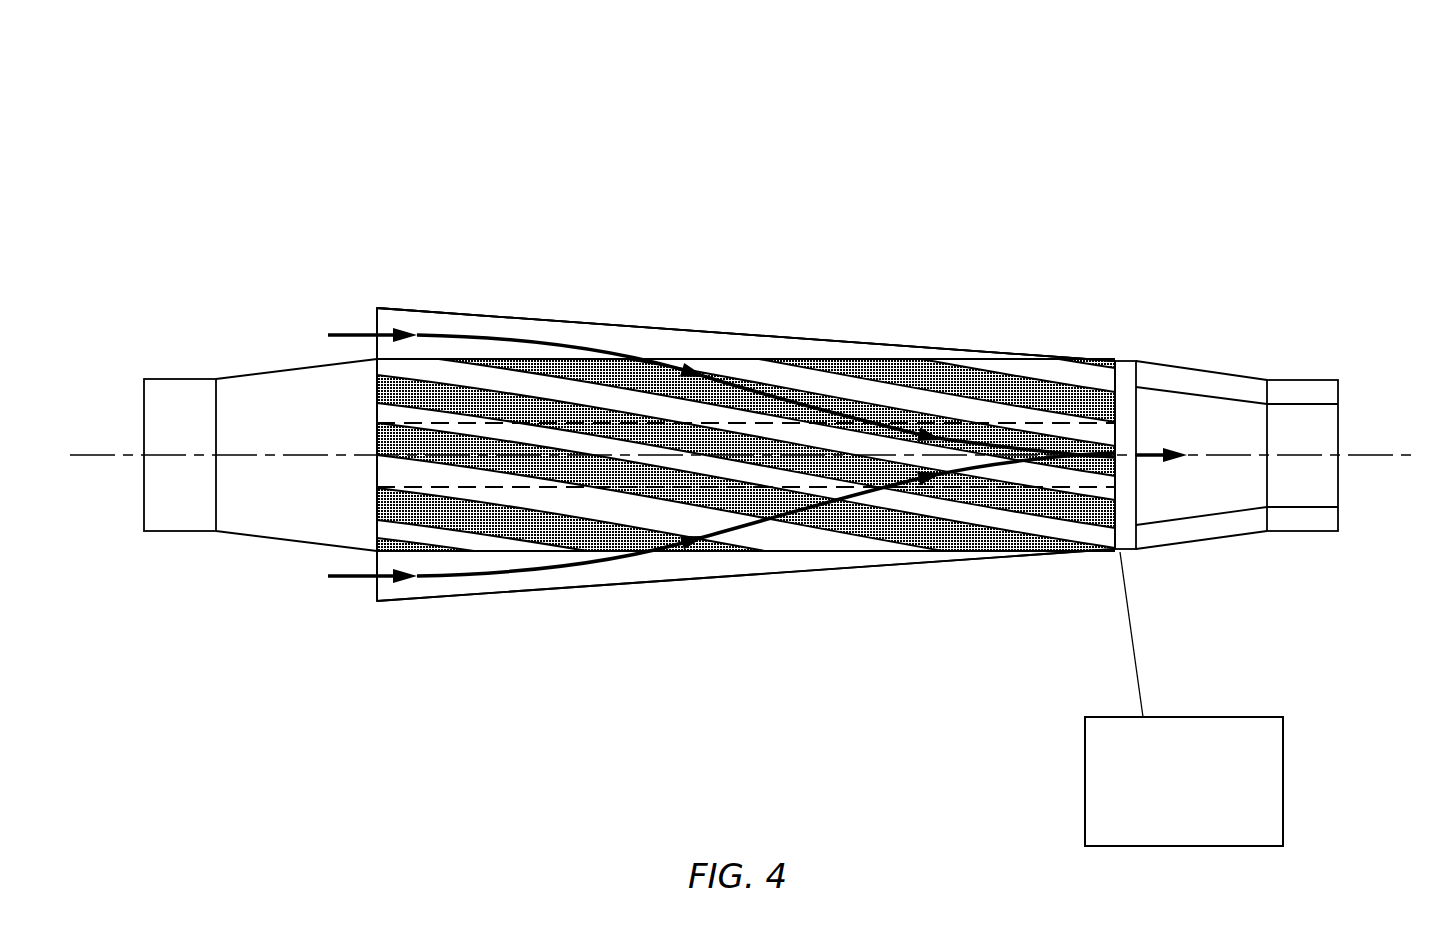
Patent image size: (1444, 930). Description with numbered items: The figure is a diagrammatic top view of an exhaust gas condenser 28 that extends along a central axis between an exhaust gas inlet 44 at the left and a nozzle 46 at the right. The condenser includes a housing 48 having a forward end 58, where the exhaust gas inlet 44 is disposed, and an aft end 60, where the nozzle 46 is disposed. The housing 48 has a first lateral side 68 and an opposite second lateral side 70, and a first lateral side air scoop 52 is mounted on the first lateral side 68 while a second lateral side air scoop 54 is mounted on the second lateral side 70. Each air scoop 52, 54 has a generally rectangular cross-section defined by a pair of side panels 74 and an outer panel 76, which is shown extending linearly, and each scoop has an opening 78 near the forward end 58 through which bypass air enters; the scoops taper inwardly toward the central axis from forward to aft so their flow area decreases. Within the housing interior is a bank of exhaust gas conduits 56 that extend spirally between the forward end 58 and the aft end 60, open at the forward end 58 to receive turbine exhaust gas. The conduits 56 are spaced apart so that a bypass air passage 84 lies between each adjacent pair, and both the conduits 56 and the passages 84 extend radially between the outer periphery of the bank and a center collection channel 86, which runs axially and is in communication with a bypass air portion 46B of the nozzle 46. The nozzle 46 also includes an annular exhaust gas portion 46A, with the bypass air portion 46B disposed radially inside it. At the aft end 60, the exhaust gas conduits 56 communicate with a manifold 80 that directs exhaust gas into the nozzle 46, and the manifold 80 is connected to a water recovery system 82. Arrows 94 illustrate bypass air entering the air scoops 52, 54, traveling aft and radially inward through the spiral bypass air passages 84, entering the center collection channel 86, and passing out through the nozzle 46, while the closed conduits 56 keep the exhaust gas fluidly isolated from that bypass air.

The exhaust gas condenser 28 is at (928, 116).
The exhaust gas inlet 44 is at (194, 569).
The nozzle 46 is at (1370, 417).
The annular exhaust gas portion 46A is at (1307, 393).
The bypass air portion 46B is at (1327, 494).
The housing 48 is at (956, 334).
The first lateral side air scoop 52 is at (519, 300).
The second lateral side air scoop 54 is at (491, 611).
The exhaust gas conduits 56 is at (392, 472).
The forward end 58 is at (375, 552).
The aft end 60 is at (1115, 553).
The first lateral side 68 is at (580, 358).
The second lateral side 70 is at (563, 553).
The side panels 74 is at (465, 332).
The outer panel 76 is at (417, 311).
The opening 78 is at (375, 320).
The manifold 80 is at (1123, 373).
The water recovery system 82 is at (1285, 745).
The bypass air passages 84 is at (963, 508).
The center collection channel 86 is at (736, 423).
The arrows 94 is at (980, 440).